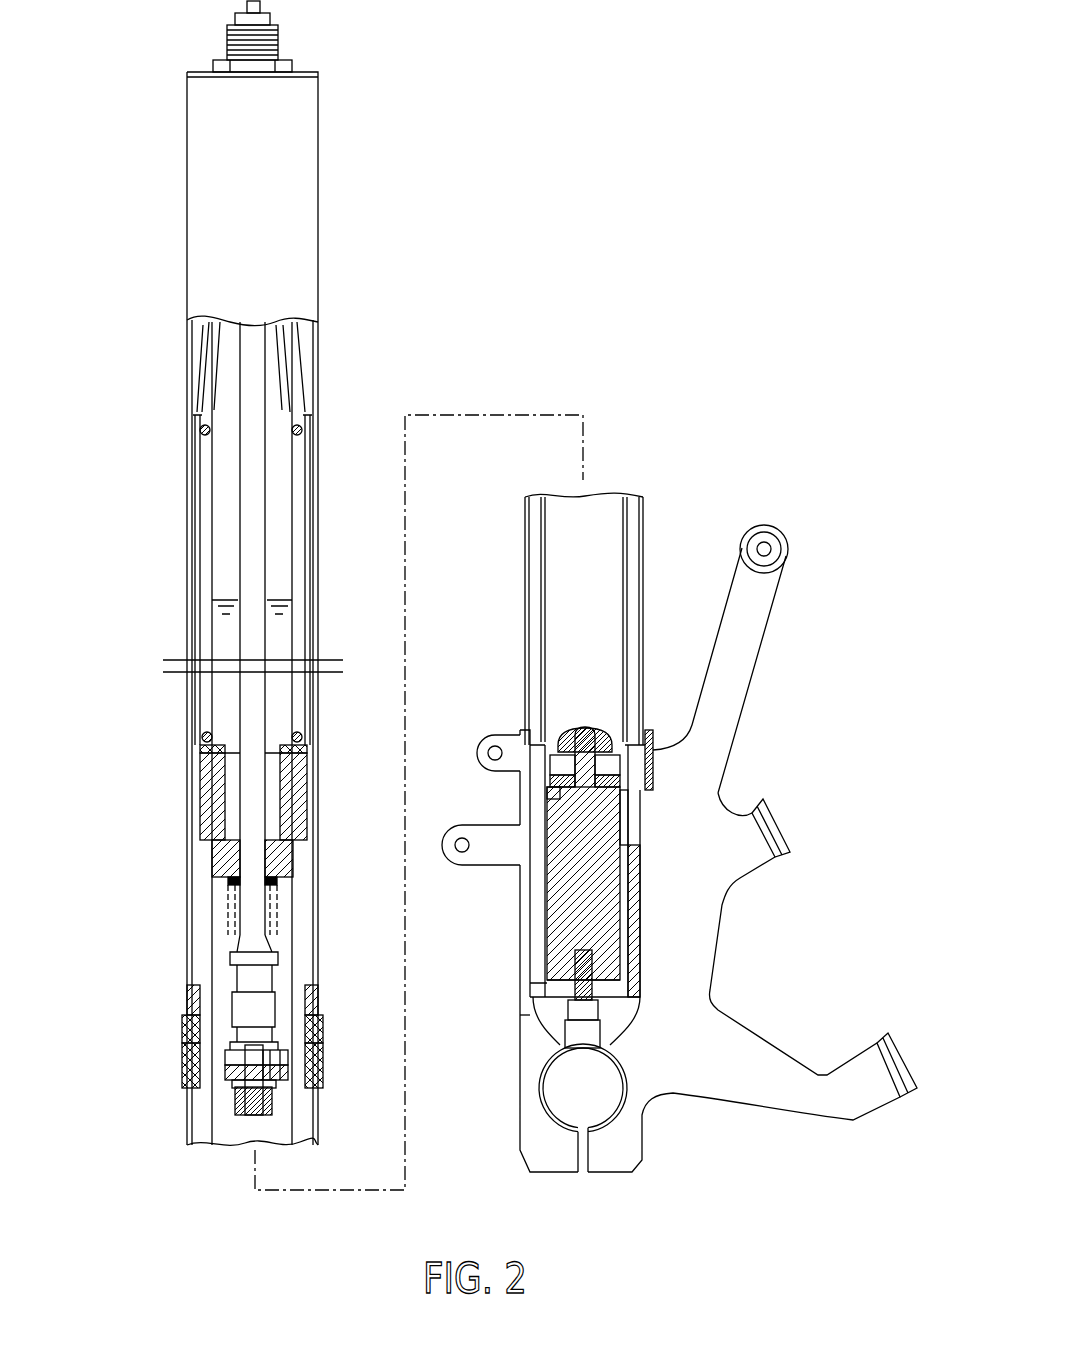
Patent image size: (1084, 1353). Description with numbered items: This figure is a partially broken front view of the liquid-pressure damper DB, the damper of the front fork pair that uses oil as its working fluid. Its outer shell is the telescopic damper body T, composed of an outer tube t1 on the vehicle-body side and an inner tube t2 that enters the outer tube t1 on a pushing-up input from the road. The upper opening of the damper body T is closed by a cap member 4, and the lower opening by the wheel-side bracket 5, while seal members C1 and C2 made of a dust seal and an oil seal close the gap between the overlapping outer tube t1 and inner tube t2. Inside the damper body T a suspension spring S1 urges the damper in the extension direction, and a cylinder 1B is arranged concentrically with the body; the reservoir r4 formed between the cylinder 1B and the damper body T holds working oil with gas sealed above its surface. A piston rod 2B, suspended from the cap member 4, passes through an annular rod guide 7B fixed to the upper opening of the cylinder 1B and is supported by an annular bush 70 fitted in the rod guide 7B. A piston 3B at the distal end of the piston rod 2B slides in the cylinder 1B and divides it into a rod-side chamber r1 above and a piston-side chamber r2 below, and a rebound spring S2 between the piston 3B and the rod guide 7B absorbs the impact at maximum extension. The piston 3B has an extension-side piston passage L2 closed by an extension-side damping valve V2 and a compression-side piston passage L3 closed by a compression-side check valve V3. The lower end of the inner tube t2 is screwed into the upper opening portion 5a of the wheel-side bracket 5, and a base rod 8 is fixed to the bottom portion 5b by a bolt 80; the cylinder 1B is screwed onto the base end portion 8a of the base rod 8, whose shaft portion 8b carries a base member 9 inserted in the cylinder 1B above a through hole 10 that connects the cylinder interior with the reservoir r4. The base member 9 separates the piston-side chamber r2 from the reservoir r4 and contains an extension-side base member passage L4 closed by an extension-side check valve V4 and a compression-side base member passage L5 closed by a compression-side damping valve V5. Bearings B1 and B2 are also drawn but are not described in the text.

The cap member 4 is at (315, 74).
The liquid-pressure damper DB is at (510, 302).
The damper body T is at (183, 370).
The suspension spring S1 is at (302, 428).
The bearing B1 is at (200, 470).
The piston rod 2B is at (258, 575).
The outer tube t1 is at (190, 610).
The reservoir r4 is at (232, 697).
The rod guide 7B is at (205, 805).
The annular bush 70 is at (290, 855).
The rebound spring S2 is at (232, 890).
The rod-side chamber r1 is at (285, 925).
The cylinder 1B is at (200, 950).
The bearing B2 is at (320, 1000).
The compression-side check valve V3 is at (225, 1040).
The seal member C2 is at (325, 1045).
The extension-side piston passage L2 is at (232, 1065).
The seal member C1 is at (325, 1075).
The extension-side damping valve V2 is at (222, 1095).
The compression-side piston passage L3 is at (283, 1085).
The piston 3B is at (284, 1097).
The piston-side chamber r2 is at (558, 547).
The inner tube t2 is at (643, 558).
The extension-side check valve V4 is at (545, 705).
The shaft portion 8b is at (580, 705).
The base member 9 is at (625, 725).
The upper opening portion 5a is at (497, 736).
The compression-side base member passage L5 is at (560, 768).
The extension-side base member passage L4 is at (610, 765).
The compression-side damping valve V5 is at (547, 795).
The through hole 10 is at (620, 792).
The base end portion 8a is at (622, 832).
The base rod 8 is at (538, 880).
The bolt 80 is at (590, 962).
The wheel-side bracket 5 is at (512, 930).
The bottom portion 5b is at (560, 1010).